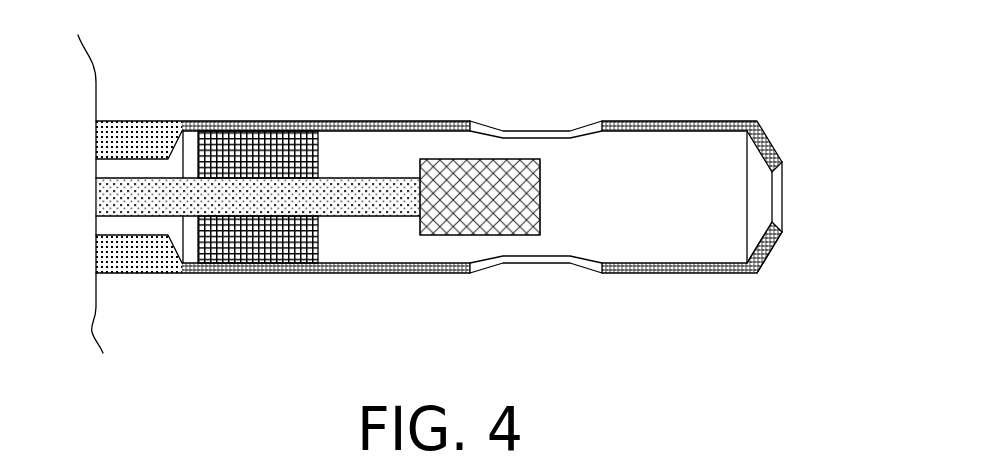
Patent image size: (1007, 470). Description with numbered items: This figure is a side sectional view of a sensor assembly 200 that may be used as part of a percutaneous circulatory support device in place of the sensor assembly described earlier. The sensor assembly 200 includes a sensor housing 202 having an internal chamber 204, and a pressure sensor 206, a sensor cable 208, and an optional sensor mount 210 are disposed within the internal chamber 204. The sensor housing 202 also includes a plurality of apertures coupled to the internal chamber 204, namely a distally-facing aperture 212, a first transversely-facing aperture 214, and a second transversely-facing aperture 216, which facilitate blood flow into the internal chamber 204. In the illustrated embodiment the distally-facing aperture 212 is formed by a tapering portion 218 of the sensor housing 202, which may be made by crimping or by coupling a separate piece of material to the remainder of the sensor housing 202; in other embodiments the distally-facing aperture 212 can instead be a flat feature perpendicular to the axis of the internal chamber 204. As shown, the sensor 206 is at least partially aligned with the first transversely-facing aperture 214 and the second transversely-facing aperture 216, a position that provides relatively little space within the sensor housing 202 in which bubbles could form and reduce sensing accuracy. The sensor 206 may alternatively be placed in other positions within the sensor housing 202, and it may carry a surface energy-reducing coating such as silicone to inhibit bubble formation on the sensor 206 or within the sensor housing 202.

The sensor assembly 200 is at (207, 70).
The sensor housing 202 is at (668, 121).
The internal chamber 204 is at (695, 158).
The pressure sensor 206 is at (448, 159).
The sensor cable 208 is at (360, 178).
The sensor mount 210 is at (287, 121).
The distally-facing aperture 212 is at (783, 185).
The first transversely-facing aperture 214 is at (560, 131).
The second transversely-facing aperture 216 is at (555, 263).
The tapering portion 218 is at (771, 250).